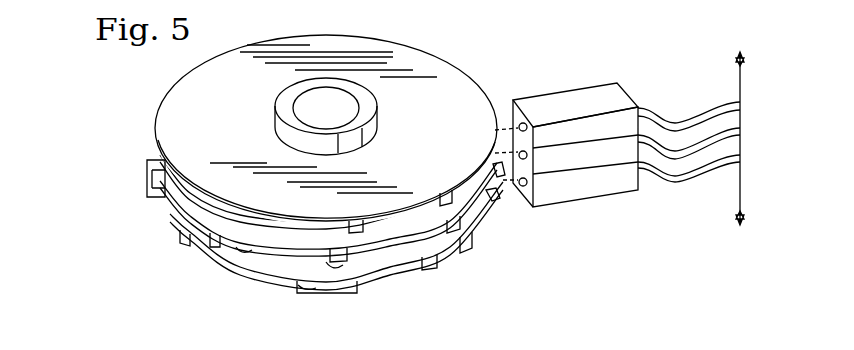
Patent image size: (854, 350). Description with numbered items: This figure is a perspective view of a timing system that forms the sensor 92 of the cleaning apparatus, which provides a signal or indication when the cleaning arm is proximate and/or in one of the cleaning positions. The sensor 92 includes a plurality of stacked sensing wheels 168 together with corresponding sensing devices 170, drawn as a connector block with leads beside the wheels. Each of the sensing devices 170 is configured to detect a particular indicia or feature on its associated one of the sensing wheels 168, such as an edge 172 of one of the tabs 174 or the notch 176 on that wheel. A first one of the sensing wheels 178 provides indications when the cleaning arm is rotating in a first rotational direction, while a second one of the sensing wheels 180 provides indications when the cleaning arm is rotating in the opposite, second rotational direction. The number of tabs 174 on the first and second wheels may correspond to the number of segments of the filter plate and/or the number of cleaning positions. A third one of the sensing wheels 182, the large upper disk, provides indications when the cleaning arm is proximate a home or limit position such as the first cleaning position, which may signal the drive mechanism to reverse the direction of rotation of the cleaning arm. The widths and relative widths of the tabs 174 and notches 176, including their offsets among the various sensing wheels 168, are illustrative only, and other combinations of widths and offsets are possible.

The sensor 92 is at (98, 129).
The sensing wheels 168 is at (155, 135).
The sensing devices 170 is at (583, 197).
The edge 172 is at (360, 228).
The tabs 174 is at (306, 287).
The notch 176 is at (413, 221).
The first one of the sensing wheels 178 is at (185, 246).
The second one of the sensing wheels 180 is at (212, 240).
The third one of the sensing wheels 182 is at (180, 101).